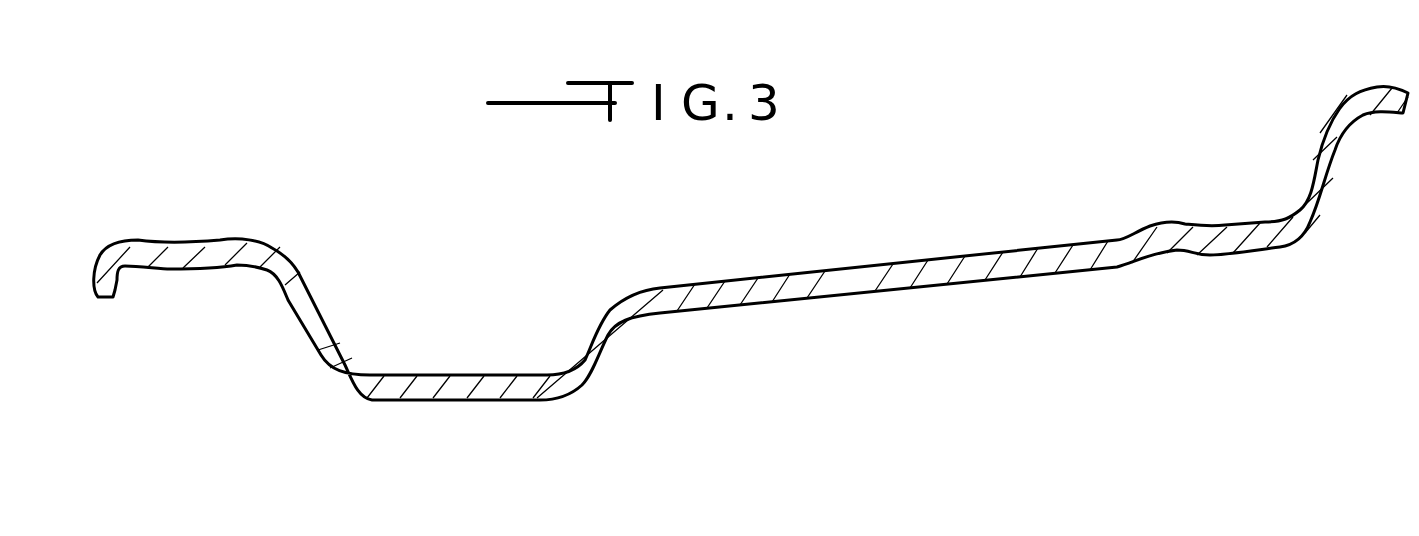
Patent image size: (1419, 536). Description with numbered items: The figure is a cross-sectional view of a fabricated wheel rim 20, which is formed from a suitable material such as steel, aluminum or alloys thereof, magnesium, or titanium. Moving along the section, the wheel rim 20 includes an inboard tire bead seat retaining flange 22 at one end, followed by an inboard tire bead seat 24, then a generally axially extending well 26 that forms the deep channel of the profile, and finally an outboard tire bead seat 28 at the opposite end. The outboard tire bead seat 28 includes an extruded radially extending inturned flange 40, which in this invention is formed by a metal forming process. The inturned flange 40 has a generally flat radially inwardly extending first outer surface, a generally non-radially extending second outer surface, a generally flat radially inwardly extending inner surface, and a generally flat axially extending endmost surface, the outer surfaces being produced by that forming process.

The wheel rim 20 is at (841, 300).
The inboard tire bead seat retaining flange 22 is at (1313, 158).
The inboard tire bead seat 24 is at (1237, 223).
The generally axially extending well 26 is at (603, 315).
The outboard tire bead seat 28 is at (192, 242).
The inturned flange 40 is at (97, 302).